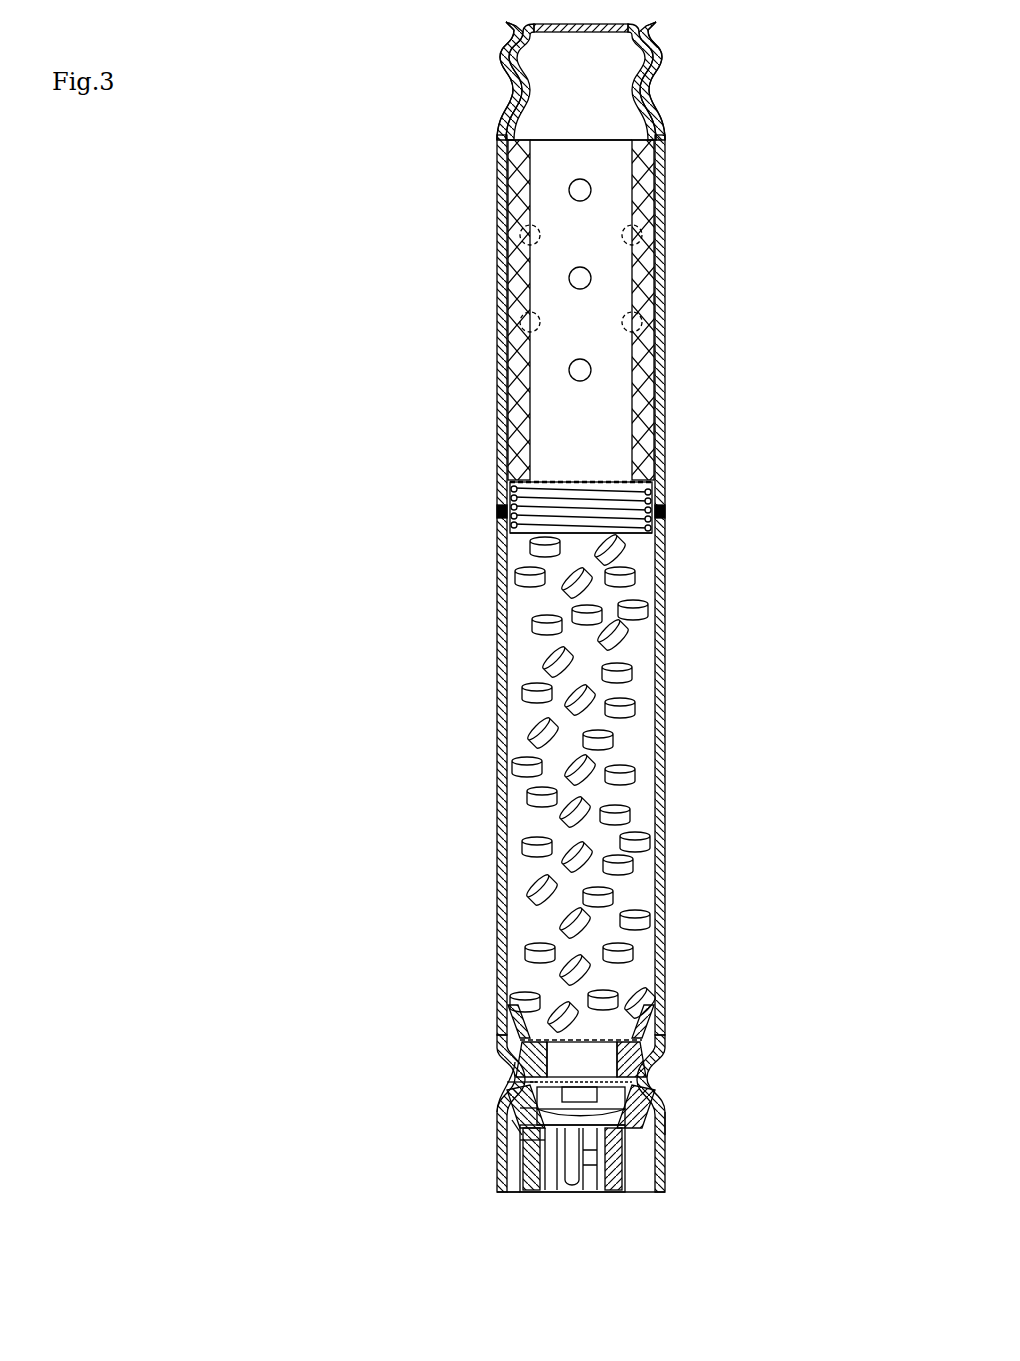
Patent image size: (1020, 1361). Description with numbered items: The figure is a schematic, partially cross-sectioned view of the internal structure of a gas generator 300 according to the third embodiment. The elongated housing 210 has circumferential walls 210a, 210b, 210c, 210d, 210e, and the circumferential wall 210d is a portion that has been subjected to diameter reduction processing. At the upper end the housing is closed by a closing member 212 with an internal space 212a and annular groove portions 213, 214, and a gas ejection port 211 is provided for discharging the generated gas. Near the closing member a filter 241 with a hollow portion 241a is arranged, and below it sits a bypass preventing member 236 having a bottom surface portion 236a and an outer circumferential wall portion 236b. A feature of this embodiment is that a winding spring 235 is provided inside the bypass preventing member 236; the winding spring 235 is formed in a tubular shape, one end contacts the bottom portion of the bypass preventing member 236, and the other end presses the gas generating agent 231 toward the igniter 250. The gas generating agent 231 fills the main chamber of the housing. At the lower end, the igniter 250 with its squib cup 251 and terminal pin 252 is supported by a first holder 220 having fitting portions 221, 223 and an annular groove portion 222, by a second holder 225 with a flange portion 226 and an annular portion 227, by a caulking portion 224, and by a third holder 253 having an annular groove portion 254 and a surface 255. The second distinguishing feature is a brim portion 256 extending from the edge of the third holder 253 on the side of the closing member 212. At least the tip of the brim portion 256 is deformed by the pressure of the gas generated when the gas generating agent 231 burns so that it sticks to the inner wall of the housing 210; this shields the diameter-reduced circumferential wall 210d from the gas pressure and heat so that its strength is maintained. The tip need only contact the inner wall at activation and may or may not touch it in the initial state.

The gas generator 300 is at (272, 168).
The housing 210 is at (497, 690).
The circumferential wall 210a is at (650, 62).
The circumferential wall 210b is at (652, 96).
The circumferential wall 210c is at (498, 509).
The circumferential wall 210d is at (650, 1062).
The circumferential wall 210e is at (650, 1127).
The gas ejection port 211 is at (490, 320).
The closing member 212 is at (657, 26).
The internal space 212a is at (563, 117).
The annular groove portion 213 is at (508, 76).
The annular groove portion 214 is at (508, 38).
The first holder 220 is at (640, 1192).
The fitting portion 221 is at (520, 1195).
The annular groove portion 222 is at (515, 1143).
The fitting portion 223 is at (576, 1183).
The caulking portion 224 is at (512, 1082).
The second holder 225 is at (515, 1108).
The flange portion 226 is at (515, 1130).
The annular portion 227 is at (515, 1097).
The gas generating agent 231 is at (622, 772).
The winding spring 235 is at (500, 500).
The bypass preventing member 236 is at (625, 444).
The bottom surface portion 236a is at (602, 470).
The outer circumferential wall portion 236b is at (665, 514).
The filter 241 is at (645, 235).
The hollow portion 241a is at (612, 290).
The igniter 250 is at (642, 1110).
The squib cup 251 is at (625, 1056).
The terminal pin 252 is at (640, 1165).
The third holder 253 is at (520, 1048).
The annular groove portion 254 is at (540, 1058).
The surface 255 is at (647, 1022).
The brim portion 256 is at (533, 1012).